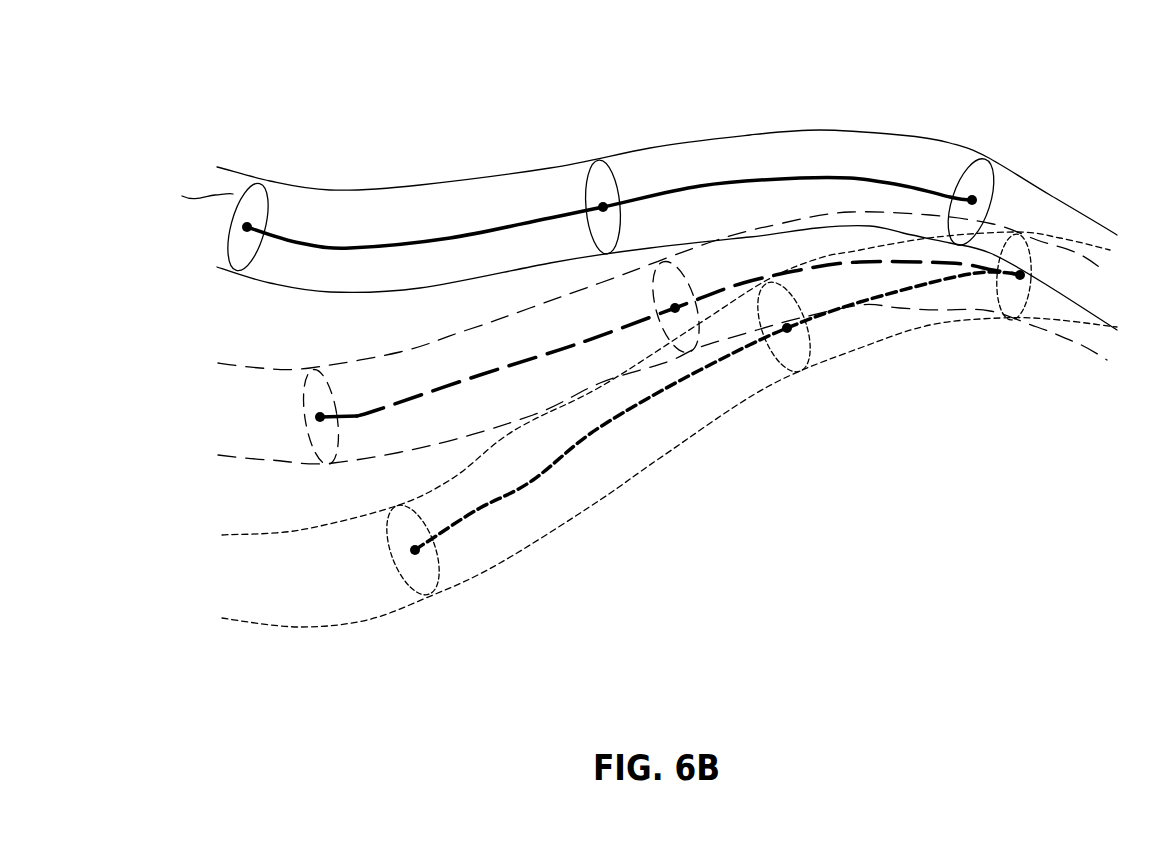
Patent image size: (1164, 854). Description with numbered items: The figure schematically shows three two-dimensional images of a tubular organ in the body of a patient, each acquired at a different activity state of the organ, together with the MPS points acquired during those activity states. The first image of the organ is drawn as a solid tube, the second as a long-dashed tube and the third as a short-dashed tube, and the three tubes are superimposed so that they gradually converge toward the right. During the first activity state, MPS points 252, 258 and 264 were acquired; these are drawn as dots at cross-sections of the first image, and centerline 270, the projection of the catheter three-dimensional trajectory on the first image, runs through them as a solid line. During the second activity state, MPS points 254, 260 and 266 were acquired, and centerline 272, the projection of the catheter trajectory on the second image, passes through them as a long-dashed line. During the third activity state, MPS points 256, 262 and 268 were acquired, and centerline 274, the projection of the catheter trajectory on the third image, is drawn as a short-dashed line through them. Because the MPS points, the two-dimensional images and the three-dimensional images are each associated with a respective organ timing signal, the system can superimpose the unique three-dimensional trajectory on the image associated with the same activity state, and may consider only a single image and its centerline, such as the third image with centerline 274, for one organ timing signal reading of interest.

The MPS point 252 is at (233, 226).
The MPS point 254 is at (312, 417).
The MPS point 256 is at (410, 552).
The MPS point 258 is at (606, 202).
The MPS point 260 is at (672, 306).
The MPS point 262 is at (787, 333).
The MPS point 264 is at (966, 195).
The MPS point 266 is at (1013, 287).
The MPS point 268 is at (1027, 274).
The centerline 270 is at (386, 248).
The centerline 272 is at (358, 412).
The centerline 274 is at (482, 508).